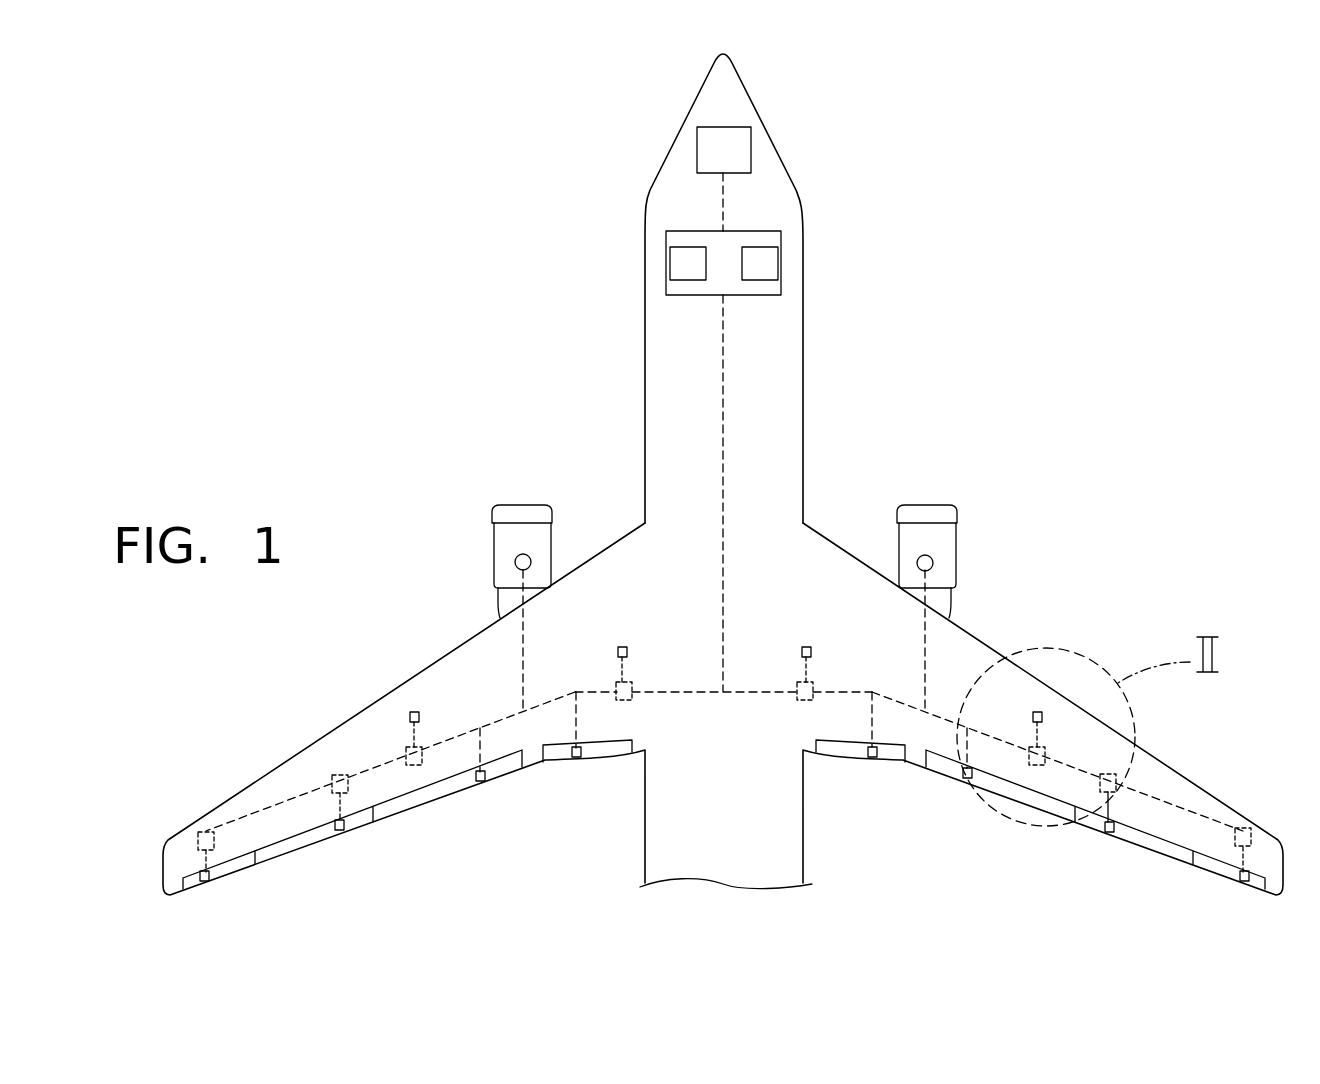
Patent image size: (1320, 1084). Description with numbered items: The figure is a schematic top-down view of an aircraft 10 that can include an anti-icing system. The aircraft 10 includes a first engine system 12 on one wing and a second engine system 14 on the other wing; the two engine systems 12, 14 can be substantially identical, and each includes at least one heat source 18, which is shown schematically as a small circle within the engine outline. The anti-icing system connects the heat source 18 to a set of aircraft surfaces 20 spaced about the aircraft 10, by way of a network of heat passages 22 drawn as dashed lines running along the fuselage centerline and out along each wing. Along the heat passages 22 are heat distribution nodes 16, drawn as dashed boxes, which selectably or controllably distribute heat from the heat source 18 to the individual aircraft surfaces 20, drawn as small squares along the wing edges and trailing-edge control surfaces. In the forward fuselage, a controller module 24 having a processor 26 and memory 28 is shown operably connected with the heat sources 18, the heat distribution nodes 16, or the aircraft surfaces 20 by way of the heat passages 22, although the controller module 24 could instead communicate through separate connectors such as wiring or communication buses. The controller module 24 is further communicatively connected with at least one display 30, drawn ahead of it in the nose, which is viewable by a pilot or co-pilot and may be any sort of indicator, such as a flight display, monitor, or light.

The aircraft 10 is at (536, 221).
The first engine system 12 is at (522, 514).
The second engine system 14 is at (938, 517).
The heat distribution nodes 16 is at (217, 852).
The heat source 18 is at (535, 558).
The aircraft surfaces 20 is at (206, 882).
The heat passages 22 is at (723, 393).
The controller module 24 is at (737, 277).
The processor 26 is at (702, 277).
The memory 28 is at (774, 277).
The display 30 is at (738, 163).